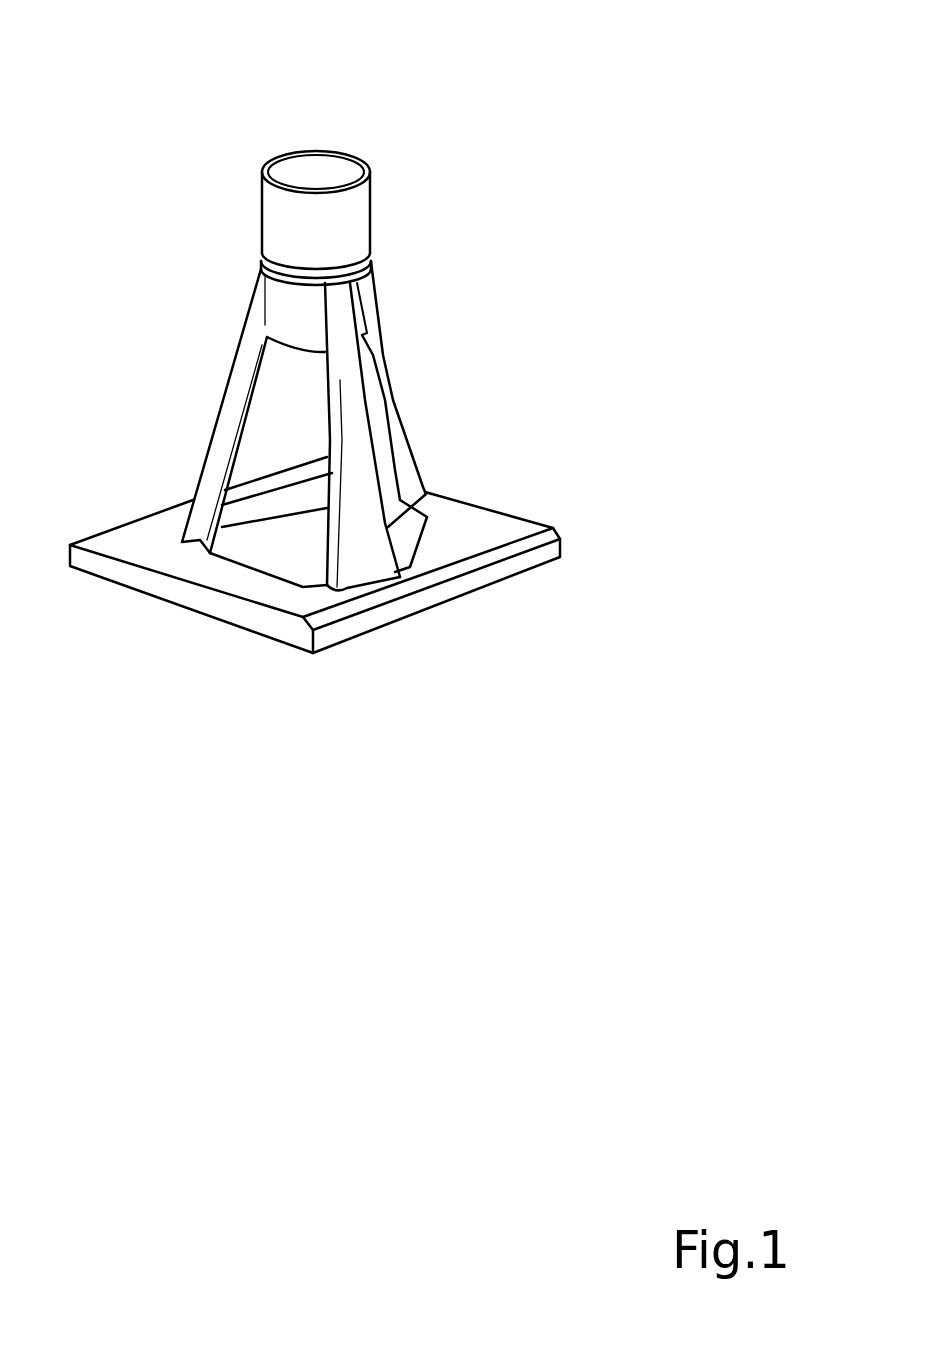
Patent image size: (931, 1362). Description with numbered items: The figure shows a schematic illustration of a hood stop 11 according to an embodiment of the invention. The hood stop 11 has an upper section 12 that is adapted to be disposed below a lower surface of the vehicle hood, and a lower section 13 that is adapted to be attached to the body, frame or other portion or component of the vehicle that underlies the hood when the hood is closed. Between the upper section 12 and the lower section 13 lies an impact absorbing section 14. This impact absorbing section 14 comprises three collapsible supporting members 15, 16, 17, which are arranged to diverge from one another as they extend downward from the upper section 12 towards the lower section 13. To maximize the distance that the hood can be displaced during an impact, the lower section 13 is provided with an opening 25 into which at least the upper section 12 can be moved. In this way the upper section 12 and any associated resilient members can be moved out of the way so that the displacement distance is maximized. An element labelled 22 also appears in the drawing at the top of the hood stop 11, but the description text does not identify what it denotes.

The container holder assembly 11 is at (432, 110).
The support frame 12 is at (383, 305).
The base plate 13 is at (528, 512).
The right leg 14 is at (405, 390).
The leg foot 15 is at (417, 467).
The front leg 16 is at (355, 552).
The left leg 17 is at (217, 408).
The cylindrical receptacle 22 is at (272, 220).
The cross member 25 is at (255, 555).